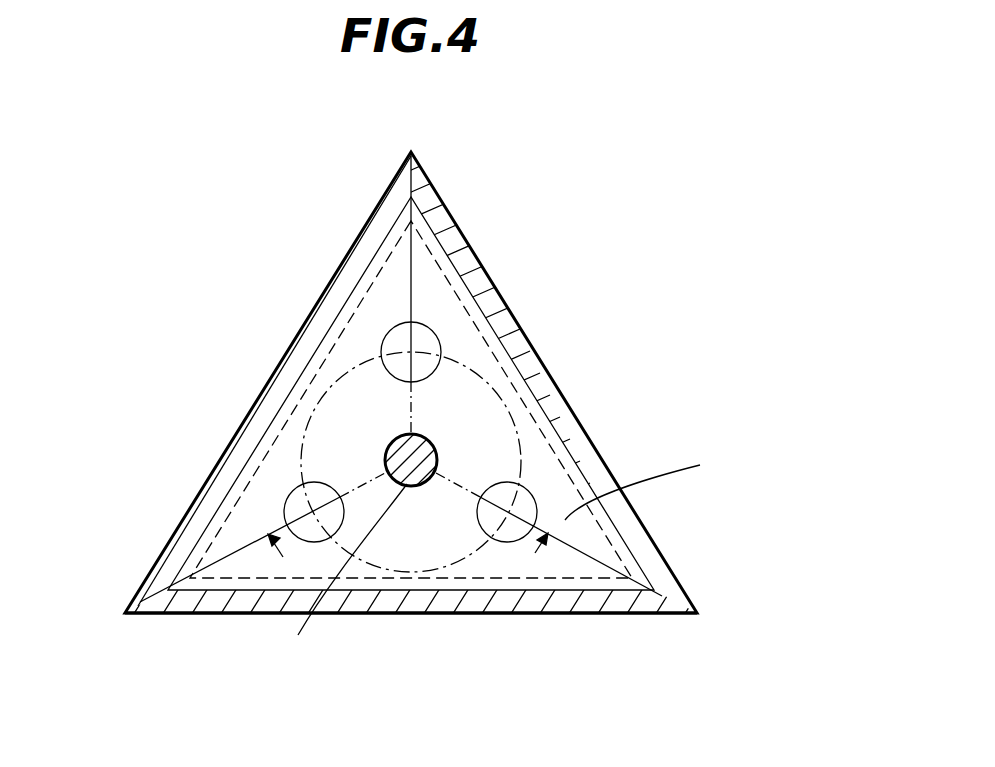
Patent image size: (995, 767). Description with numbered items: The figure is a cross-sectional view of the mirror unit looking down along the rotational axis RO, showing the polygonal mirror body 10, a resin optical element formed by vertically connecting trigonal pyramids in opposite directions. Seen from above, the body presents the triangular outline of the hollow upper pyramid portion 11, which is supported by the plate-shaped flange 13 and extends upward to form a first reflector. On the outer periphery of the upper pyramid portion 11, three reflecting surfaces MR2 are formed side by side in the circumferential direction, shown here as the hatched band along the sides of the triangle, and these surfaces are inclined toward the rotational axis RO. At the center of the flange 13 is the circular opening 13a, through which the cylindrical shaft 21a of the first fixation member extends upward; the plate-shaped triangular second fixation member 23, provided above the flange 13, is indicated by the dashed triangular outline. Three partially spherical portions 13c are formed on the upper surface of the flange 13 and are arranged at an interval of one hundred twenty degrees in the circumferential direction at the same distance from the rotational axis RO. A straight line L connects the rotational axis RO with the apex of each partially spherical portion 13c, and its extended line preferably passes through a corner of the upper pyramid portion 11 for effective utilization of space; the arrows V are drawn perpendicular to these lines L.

The polygonal mirror body 10 is at (413, 152).
The upper pyramid portion 11 is at (160, 605).
The flange 13 is at (649, 484).
The circular opening 13a is at (430, 447).
The partially spherical portions 13c is at (420, 345).
The cylindrical shaft 21a is at (339, 583).
The second fixation member 23 is at (280, 433).
The reflecting surfaces MR2 is at (297, 335).
The straight line L is at (347, 258).
The rotational axis RO is at (382, 447).
The feed direction V is at (413, 555).